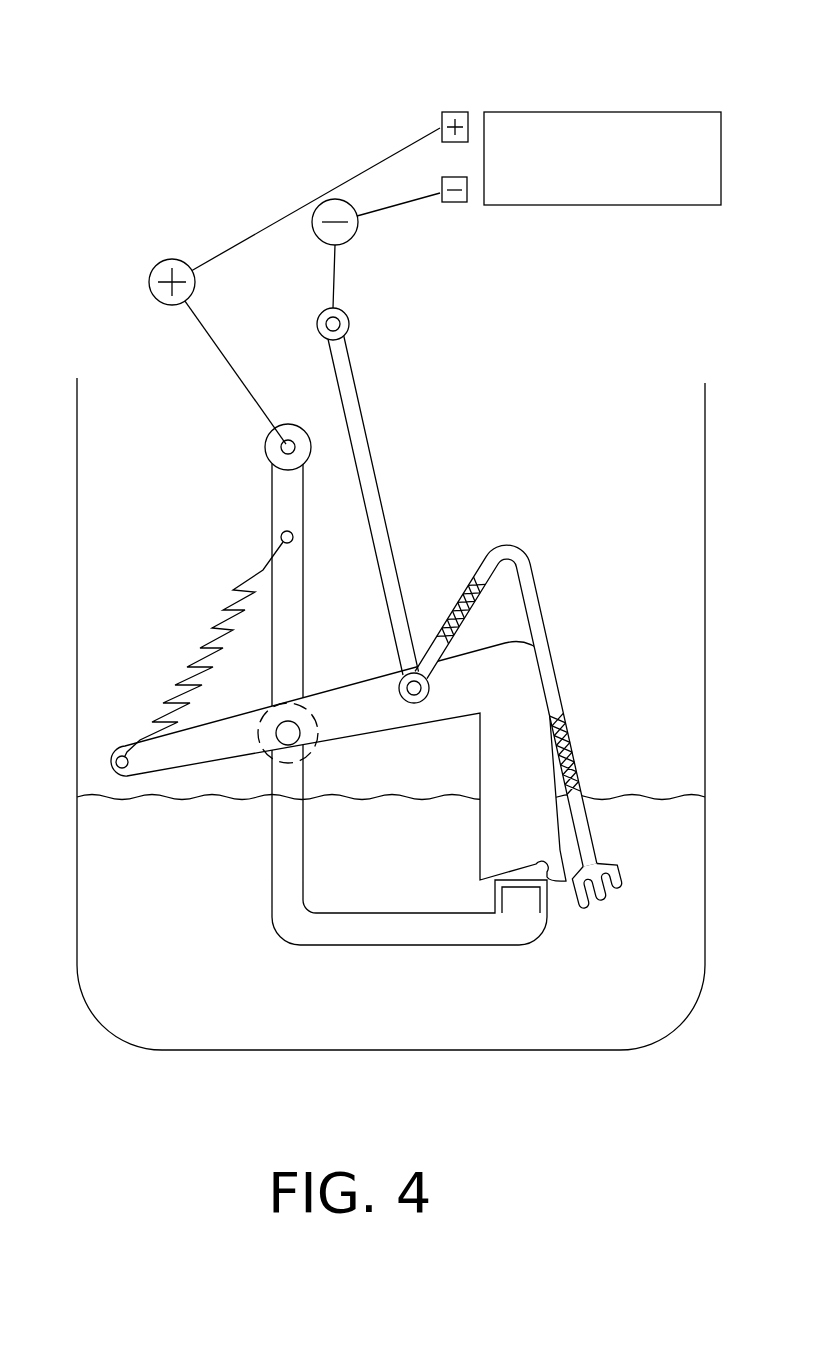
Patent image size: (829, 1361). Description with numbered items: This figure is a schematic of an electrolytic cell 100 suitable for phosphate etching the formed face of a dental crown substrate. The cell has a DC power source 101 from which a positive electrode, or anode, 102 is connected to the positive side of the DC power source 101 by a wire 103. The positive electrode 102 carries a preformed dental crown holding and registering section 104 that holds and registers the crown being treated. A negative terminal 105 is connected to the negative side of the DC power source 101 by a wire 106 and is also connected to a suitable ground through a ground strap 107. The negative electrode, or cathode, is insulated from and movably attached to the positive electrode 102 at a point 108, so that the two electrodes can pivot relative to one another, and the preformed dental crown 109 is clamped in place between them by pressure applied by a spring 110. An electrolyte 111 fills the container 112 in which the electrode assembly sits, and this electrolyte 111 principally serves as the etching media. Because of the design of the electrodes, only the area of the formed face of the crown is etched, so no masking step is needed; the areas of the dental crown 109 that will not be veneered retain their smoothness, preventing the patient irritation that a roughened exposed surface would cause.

The electrolytic cell 100 is at (188, 67).
The DC power source 101 is at (630, 112).
The positive electrode (anode) 102 is at (444, 112).
The wire 103 is at (347, 175).
The preformed dental crown holding and registering section 104 is at (480, 866).
The negative terminal 105 is at (450, 203).
The wire 106 is at (358, 215).
The ground strap 107 is at (365, 423).
The point 108 is at (400, 703).
The preformed dental crown 109 is at (545, 912).
The spring 110 is at (220, 568).
The electrolyte 111 is at (162, 985).
The container 112 is at (330, 1052).